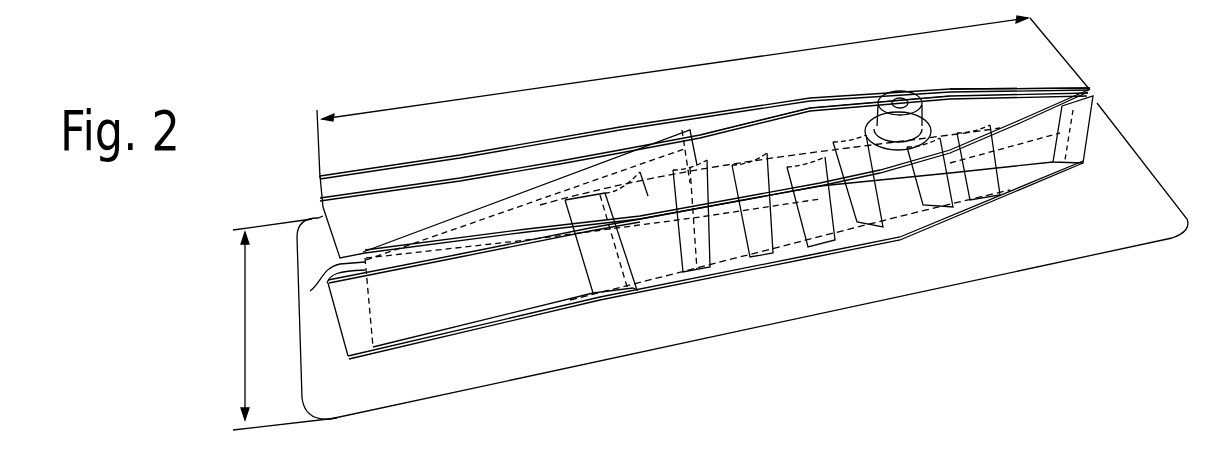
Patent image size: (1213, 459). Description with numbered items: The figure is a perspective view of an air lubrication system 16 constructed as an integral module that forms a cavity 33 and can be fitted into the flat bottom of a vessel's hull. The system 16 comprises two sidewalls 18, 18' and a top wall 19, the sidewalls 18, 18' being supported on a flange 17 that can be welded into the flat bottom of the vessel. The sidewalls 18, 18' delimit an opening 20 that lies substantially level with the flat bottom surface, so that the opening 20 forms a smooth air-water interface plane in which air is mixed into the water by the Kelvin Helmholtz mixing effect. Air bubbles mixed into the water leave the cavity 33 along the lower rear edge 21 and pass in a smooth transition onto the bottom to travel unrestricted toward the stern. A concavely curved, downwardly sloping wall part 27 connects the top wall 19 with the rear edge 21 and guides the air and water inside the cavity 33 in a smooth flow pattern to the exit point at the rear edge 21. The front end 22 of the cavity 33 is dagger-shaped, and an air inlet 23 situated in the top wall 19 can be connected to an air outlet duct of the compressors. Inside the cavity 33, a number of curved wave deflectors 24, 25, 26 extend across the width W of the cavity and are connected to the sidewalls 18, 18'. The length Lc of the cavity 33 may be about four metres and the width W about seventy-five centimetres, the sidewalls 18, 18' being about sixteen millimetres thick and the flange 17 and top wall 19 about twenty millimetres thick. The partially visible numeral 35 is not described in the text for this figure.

The air lubrication system 16 is at (623, 72).
The flange 17 is at (392, 372).
The sidewall 18 is at (692, 271).
The sidewall 18' is at (705, 146).
The top wall 19 is at (963, 114).
The opening 20 is at (557, 310).
The rear edge 21 is at (312, 290).
The front end 22 is at (1098, 134).
The air inlet 23 is at (892, 97).
The curved wave deflector 24 is at (657, 270).
The curved wave deflector 25 is at (797, 247).
The curved wave deflector 26 is at (963, 185).
The concavely curved, downwardly sloping wall part 27 is at (663, 165).
The cavity 33 is at (779, 150).
The element 35 is at (825, 451).
The length of the cavity Lc is at (703, 97).
The width of the cavity W is at (274, 324).